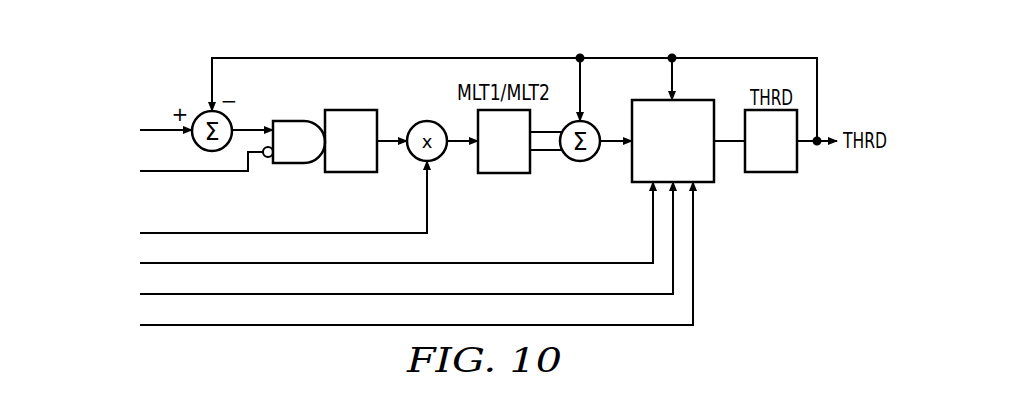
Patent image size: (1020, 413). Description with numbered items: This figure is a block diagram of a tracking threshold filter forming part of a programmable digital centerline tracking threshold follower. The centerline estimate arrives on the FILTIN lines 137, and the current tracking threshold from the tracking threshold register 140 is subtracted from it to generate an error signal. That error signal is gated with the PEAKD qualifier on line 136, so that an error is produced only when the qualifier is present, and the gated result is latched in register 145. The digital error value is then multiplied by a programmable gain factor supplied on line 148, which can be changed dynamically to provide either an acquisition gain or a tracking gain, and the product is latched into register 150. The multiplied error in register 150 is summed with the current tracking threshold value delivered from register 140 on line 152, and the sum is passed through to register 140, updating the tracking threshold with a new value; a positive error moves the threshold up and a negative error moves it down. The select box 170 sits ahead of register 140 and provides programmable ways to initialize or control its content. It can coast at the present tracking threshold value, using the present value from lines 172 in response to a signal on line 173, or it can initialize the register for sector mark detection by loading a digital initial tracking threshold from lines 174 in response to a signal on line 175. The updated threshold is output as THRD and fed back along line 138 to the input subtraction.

The FILTIN lines 137 is at (157, 128).
The threshold feedback line to summer 138 is at (213, 92).
The PEAKD qualifier line 136 is at (213, 175).
The register 145 is at (350, 173).
The programmable gain factor line 148 is at (430, 223).
The register 150 is at (504, 173).
The current tracking threshold line 152 is at (582, 90).
The select box 170 is at (630, 172).
The present value lines 172 is at (675, 75).
The digital initial tracking threshold lines 174 is at (580, 262).
The initialization signal line 175 is at (675, 232).
The coast signal line 173 is at (693, 272).
The tracking threshold register 140 is at (772, 173).